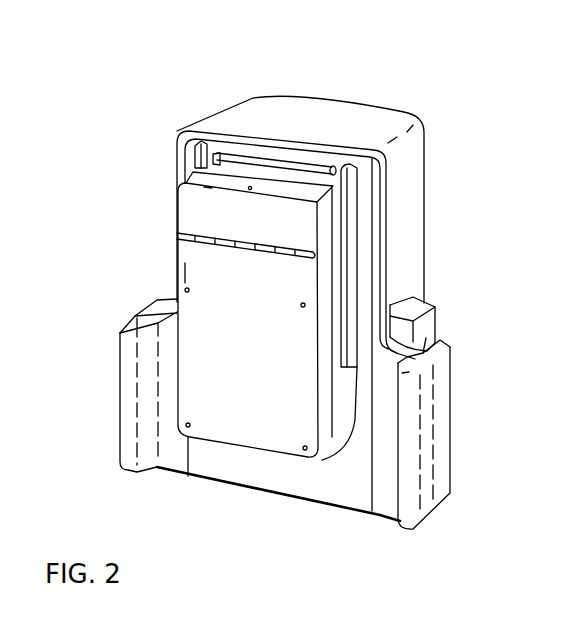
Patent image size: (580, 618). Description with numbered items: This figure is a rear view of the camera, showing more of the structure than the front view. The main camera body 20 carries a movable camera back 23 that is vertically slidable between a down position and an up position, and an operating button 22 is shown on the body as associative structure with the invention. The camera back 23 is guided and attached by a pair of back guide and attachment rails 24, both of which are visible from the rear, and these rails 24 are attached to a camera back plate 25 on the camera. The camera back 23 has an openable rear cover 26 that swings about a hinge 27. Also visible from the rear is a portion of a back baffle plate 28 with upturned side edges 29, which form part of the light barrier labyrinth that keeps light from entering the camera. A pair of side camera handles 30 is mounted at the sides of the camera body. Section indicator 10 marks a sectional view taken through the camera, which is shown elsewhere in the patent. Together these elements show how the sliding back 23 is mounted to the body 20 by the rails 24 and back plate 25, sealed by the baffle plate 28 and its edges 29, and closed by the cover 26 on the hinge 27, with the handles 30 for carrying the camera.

The section line indicator 10 is at (145, 252).
The main camera body 20 is at (416, 135).
The operating button 22 is at (437, 322).
The movable camera back 23 is at (198, 379).
The back guide and attachment rail 24 is at (357, 228).
The camera back plate 25 is at (386, 192).
The openable rear cover 26 is at (184, 266).
The hinge 27 is at (196, 233).
The back baffle plate 28 is at (288, 160).
The upturned side edges 29 is at (224, 152).
The side camera handles 30 is at (125, 348).